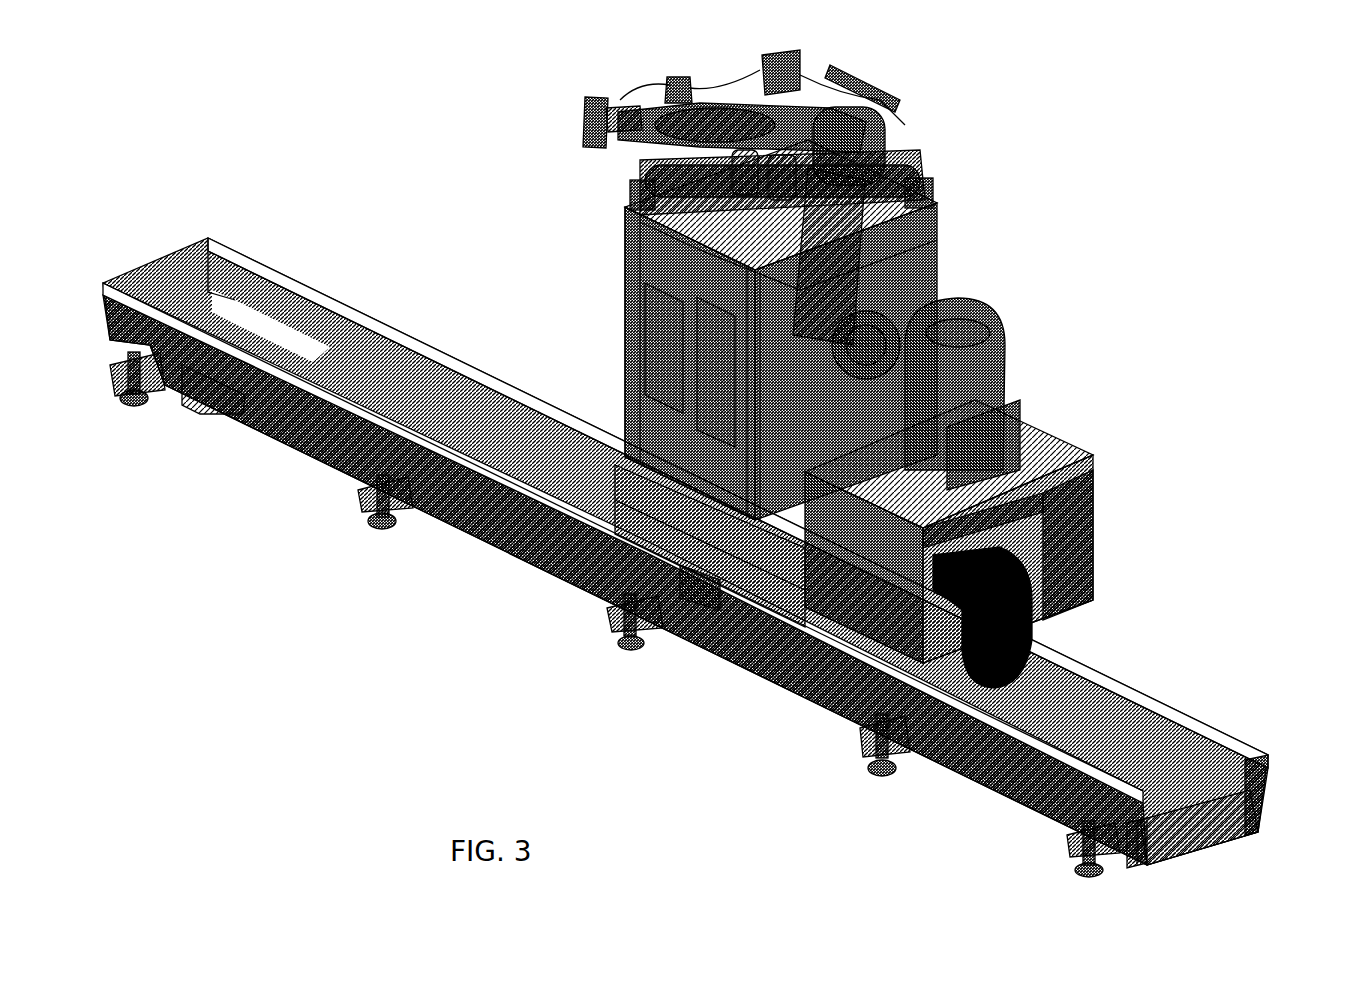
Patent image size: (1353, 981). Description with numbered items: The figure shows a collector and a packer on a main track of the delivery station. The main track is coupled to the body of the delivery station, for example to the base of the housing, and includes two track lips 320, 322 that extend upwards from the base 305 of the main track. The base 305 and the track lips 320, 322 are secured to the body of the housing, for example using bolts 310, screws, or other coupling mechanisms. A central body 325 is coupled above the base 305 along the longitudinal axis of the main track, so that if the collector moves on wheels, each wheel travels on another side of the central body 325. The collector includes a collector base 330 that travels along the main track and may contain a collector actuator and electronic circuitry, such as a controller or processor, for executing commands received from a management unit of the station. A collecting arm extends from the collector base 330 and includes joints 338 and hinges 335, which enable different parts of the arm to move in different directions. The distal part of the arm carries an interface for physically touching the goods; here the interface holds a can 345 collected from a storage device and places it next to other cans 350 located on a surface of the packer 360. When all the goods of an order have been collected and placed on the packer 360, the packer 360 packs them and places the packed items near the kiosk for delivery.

The base 305 is at (1197, 840).
The bolts 310 is at (618, 638).
The track lip 320 is at (1213, 723).
The track lip 322 is at (1120, 853).
The central body 325 is at (1255, 828).
The collector base 330 is at (1057, 450).
The hinges 335 is at (944, 288).
The joints 338 is at (718, 105).
The can 345 is at (586, 108).
The cans 350 is at (680, 162).
The packer 360 is at (625, 306).